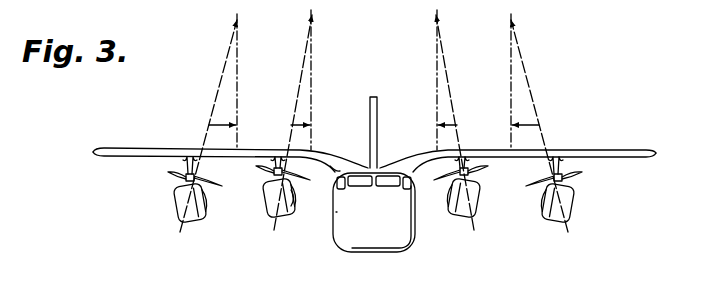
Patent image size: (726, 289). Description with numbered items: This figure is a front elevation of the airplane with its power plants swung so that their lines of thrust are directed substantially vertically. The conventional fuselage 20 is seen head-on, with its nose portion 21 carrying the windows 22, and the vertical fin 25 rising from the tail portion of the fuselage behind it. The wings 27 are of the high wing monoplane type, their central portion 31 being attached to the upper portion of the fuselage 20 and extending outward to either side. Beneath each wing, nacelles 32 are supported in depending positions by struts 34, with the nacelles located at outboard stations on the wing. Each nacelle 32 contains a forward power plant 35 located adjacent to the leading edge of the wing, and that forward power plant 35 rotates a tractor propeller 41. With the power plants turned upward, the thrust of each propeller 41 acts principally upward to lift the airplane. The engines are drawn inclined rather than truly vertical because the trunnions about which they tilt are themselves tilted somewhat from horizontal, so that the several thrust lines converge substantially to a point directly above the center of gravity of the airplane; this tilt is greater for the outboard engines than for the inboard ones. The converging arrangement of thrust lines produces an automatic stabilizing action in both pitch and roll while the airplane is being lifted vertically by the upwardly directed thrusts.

The fuselage 20 is at (394, 252).
The nose portion 21 is at (370, 213).
The windows 22 is at (407, 187).
The vertical fin 25 is at (370, 100).
The wings 27 is at (117, 148).
The central portion 31 is at (338, 167).
The nacelle 32 is at (292, 200).
The struts 34 is at (188, 159).
The forward power plant 35 is at (176, 207).
The propeller 41 is at (172, 174).